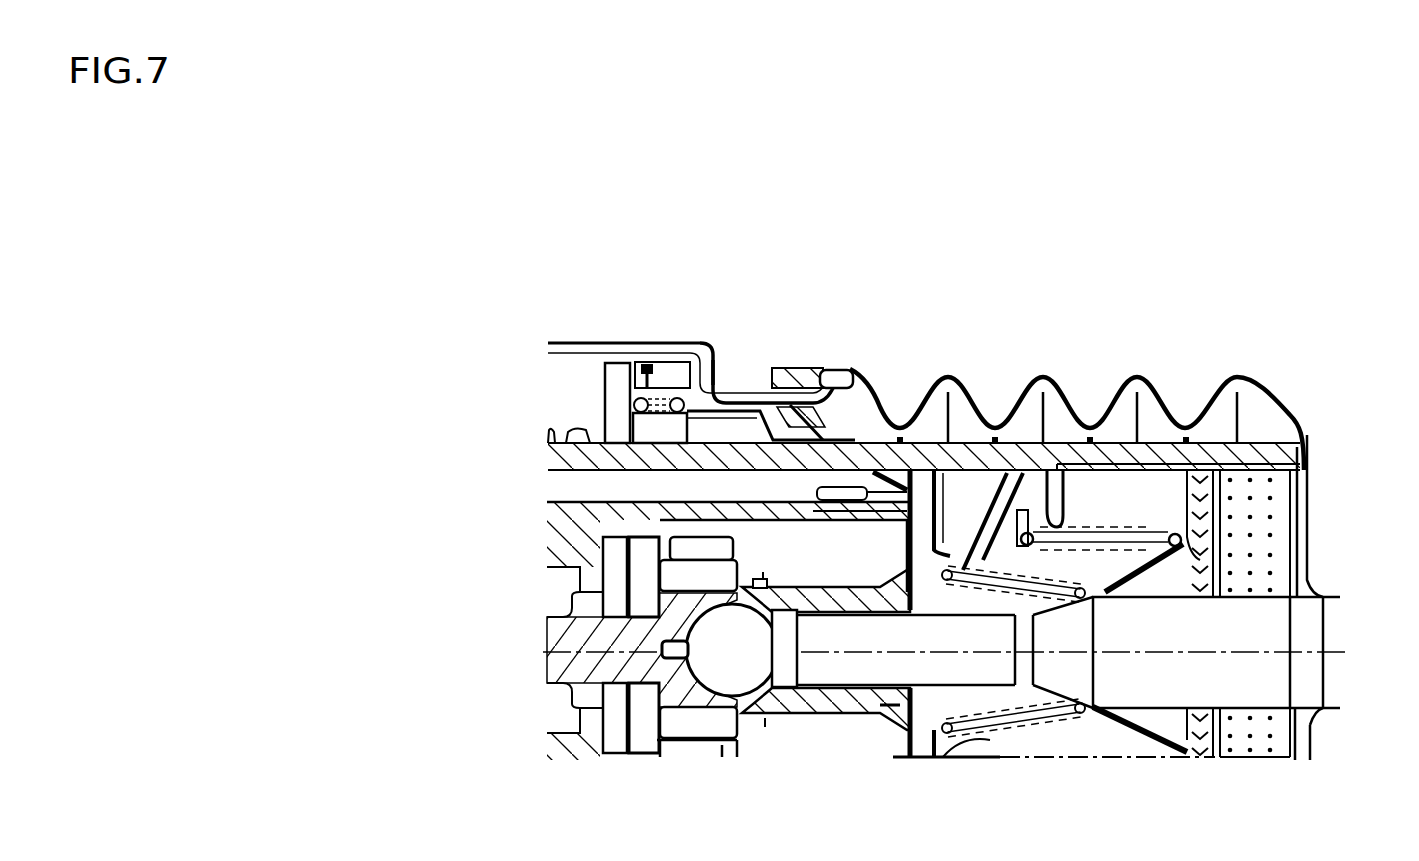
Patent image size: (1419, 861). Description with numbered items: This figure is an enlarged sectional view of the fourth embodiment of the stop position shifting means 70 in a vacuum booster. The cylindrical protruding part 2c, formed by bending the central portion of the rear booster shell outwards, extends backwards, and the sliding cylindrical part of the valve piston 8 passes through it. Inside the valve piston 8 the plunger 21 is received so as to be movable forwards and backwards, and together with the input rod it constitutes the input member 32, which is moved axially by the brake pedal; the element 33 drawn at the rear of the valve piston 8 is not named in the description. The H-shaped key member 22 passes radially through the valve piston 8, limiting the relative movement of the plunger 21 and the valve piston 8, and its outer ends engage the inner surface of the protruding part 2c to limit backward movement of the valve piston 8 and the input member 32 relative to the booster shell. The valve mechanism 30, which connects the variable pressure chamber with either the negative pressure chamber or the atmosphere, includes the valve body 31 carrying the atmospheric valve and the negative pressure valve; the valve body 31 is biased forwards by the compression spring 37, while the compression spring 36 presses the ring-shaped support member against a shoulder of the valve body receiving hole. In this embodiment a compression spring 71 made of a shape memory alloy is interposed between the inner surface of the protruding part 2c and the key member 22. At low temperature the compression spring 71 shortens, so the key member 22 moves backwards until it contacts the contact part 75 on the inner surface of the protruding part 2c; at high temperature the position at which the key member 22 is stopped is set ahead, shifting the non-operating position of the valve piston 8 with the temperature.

The protruding part 2c is at (579, 340).
The key member 22 is at (618, 372).
The stop position shifting means 70 is at (646, 336).
The contact part 75 is at (655, 367).
The compression spring 71 is at (657, 387).
The valve mechanism 30 is at (886, 455).
The valve body 31 is at (893, 467).
The valve piston 8 is at (967, 452).
The compression spring 37 is at (1055, 555).
The compression spring 36 is at (1138, 530).
The shaft 33 is at (1262, 617).
The plunger 21 is at (567, 667).
The input member 32 is at (693, 673).